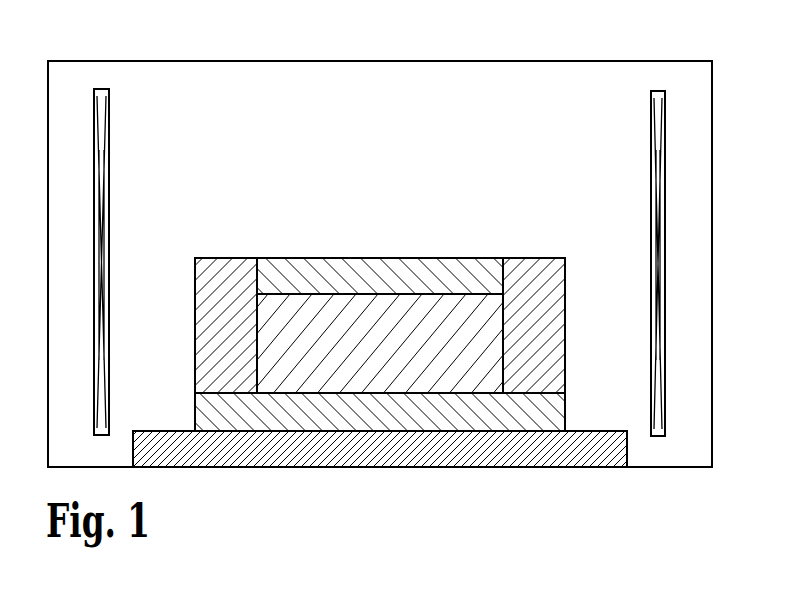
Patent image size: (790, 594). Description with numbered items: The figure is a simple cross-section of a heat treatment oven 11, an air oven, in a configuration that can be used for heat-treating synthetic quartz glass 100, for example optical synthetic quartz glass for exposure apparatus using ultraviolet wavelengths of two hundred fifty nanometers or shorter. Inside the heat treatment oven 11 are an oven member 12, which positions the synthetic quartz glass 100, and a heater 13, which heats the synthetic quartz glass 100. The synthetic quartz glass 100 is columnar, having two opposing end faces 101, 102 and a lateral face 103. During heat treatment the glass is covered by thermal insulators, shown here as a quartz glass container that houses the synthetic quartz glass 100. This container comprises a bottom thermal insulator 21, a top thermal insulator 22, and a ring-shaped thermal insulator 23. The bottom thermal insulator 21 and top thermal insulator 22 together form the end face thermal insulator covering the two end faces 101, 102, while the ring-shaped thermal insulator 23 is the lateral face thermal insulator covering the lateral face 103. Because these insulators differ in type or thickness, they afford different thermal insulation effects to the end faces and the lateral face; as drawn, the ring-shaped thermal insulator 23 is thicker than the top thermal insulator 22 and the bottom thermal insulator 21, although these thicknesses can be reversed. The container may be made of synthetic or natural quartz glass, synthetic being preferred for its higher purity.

The heat treatment oven 11 is at (346, 54).
The oven member 12 is at (173, 438).
The heater 13 is at (109, 121).
The bottom thermal insulator 21 is at (553, 417).
The top thermal insulator 22 is at (306, 257).
The ring-shaped thermal insulator 23 is at (227, 263).
The synthetic quartz glass 100 is at (355, 293).
The end face 101 is at (392, 404).
The end face 102 is at (435, 285).
The lateral face 103 is at (514, 335).